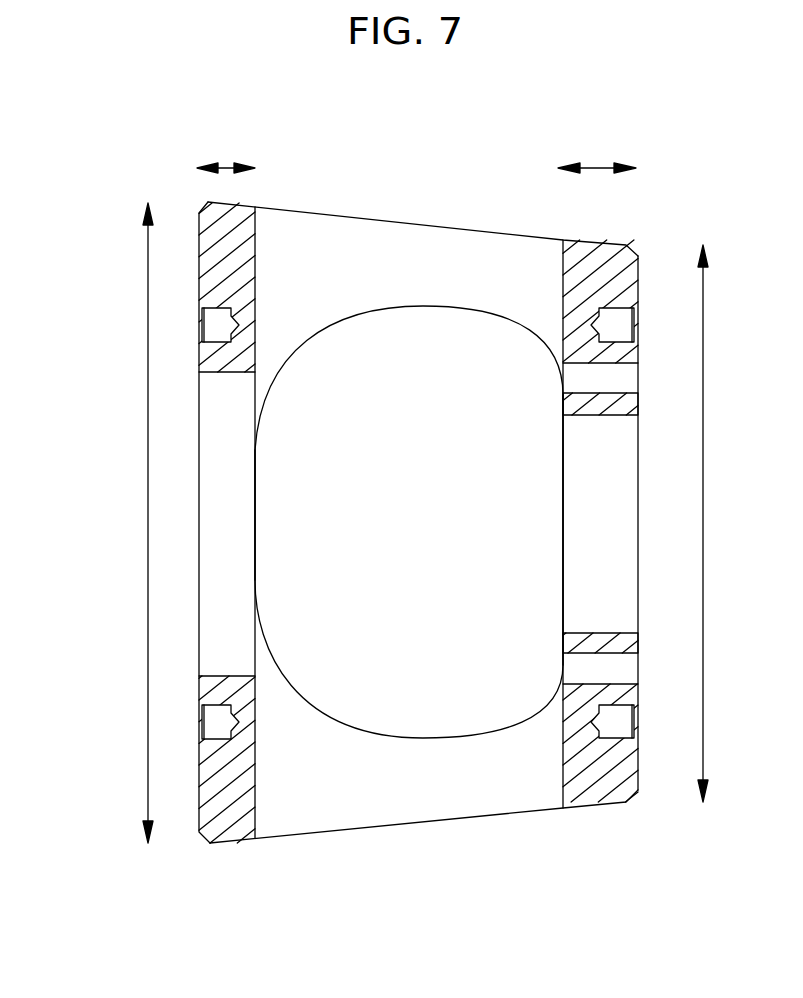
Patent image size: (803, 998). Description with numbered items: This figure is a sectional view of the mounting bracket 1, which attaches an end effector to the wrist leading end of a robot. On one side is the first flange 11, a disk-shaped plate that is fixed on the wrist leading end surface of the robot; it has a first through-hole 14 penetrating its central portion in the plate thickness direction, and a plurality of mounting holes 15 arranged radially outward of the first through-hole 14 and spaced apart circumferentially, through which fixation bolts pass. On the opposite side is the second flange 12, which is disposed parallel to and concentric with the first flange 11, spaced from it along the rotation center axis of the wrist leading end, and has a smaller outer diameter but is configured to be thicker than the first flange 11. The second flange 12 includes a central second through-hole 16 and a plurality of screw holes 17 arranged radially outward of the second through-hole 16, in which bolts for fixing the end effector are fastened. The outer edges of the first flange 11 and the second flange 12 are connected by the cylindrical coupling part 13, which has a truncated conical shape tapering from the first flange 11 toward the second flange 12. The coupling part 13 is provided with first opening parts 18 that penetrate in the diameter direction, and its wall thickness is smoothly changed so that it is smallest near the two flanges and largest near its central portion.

The mounting bracket 1 is at (98, 147).
The first flange 11 is at (199, 603).
The second flange 12 is at (637, 605).
The coupling part 13 is at (350, 268).
The first through-hole 14 is at (250, 663).
The mounting holes 15 is at (215, 337).
The second through-hole 16 is at (590, 633).
The screw holes 17 is at (623, 317).
The first opening parts 18 is at (443, 308).